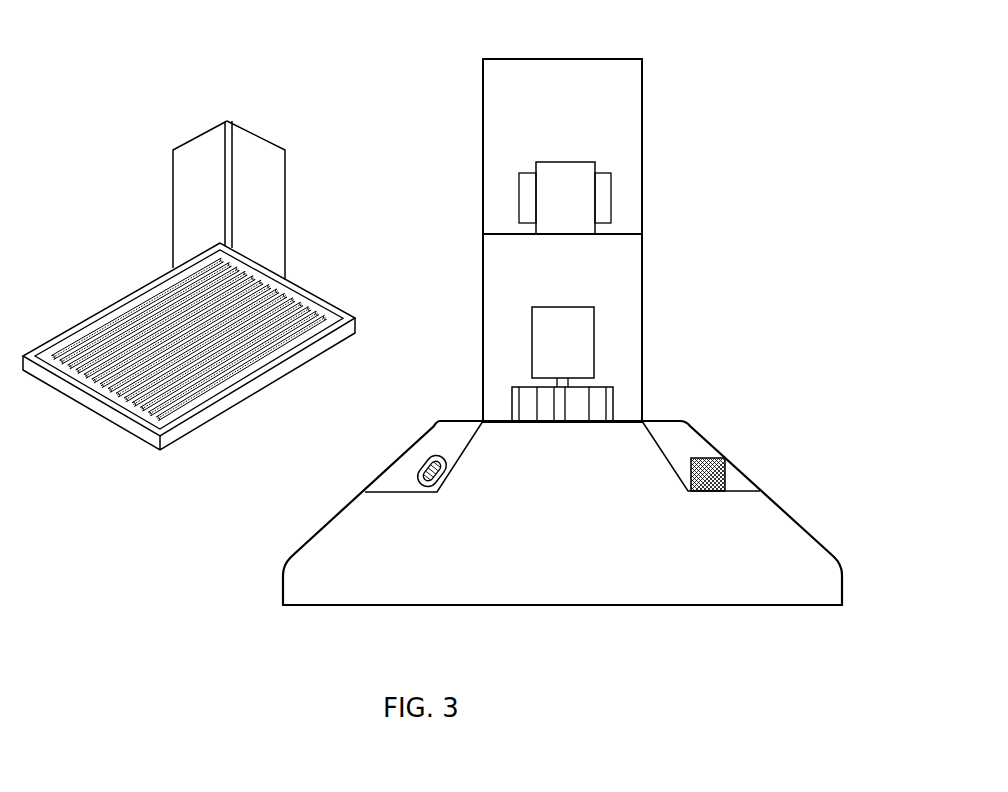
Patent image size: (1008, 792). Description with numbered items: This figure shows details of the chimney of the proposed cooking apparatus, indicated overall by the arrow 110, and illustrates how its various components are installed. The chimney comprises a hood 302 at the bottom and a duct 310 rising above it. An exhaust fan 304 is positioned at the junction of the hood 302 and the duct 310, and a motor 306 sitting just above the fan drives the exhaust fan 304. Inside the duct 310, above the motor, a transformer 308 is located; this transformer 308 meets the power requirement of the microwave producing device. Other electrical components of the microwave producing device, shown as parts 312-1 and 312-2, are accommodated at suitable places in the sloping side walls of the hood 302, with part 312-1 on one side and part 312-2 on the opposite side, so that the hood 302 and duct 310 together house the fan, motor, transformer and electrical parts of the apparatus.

The range hood system 110 is at (411, 57).
The duct 310 is at (643, 110).
The transformer 308 is at (580, 211).
The motor 306 is at (573, 341).
The exhaust fan 304 is at (598, 405).
The hood 302 is at (777, 550).
The electrical component 312-1 is at (723, 455).
The electrical component 312-2 is at (420, 468).